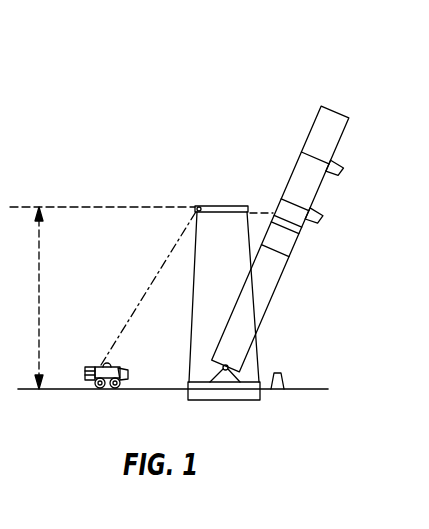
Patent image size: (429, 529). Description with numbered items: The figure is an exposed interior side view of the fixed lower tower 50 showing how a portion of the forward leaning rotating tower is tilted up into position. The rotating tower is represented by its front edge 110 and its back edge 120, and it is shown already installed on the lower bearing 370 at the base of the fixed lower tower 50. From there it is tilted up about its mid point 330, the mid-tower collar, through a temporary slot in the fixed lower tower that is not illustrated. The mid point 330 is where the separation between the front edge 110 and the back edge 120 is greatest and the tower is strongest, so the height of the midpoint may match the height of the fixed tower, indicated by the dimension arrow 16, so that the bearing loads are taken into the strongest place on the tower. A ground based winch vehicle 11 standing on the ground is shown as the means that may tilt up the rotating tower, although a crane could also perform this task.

The ground based winch vehicle 11 is at (97, 366).
The height 16 is at (40, 287).
The fixed lower tower 50 is at (213, 258).
The front edge 110 is at (311, 127).
The back edge 120 is at (327, 188).
The mid point 330 is at (274, 216).
The lower bearing 370 is at (221, 366).